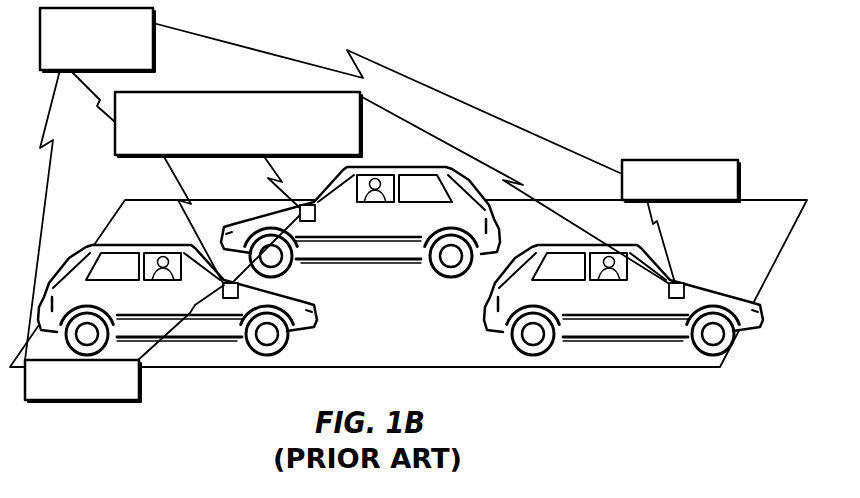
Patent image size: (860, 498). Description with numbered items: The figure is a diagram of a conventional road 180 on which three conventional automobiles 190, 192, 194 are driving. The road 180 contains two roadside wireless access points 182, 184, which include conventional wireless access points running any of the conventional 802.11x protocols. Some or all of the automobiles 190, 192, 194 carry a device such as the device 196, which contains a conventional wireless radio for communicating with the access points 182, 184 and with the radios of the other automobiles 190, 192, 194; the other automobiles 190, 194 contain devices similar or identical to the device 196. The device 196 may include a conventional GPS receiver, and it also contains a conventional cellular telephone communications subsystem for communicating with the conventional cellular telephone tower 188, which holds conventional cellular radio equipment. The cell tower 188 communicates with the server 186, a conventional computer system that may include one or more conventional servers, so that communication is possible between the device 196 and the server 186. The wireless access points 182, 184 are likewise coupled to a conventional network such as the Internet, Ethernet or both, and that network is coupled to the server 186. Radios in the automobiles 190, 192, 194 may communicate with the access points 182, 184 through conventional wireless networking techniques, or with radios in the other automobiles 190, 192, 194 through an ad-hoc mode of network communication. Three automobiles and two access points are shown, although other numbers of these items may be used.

The road 180 is at (463, 361).
The wireless access point 182 is at (123, 391).
The wireless access point 184 is at (723, 194).
The server 186 is at (117, 66).
The cellular telephone tower 188 is at (260, 147).
The automobile 190 is at (380, 216).
The automobile 192 is at (163, 296).
The automobile 194 is at (609, 296).
The device 196 is at (437, 284).